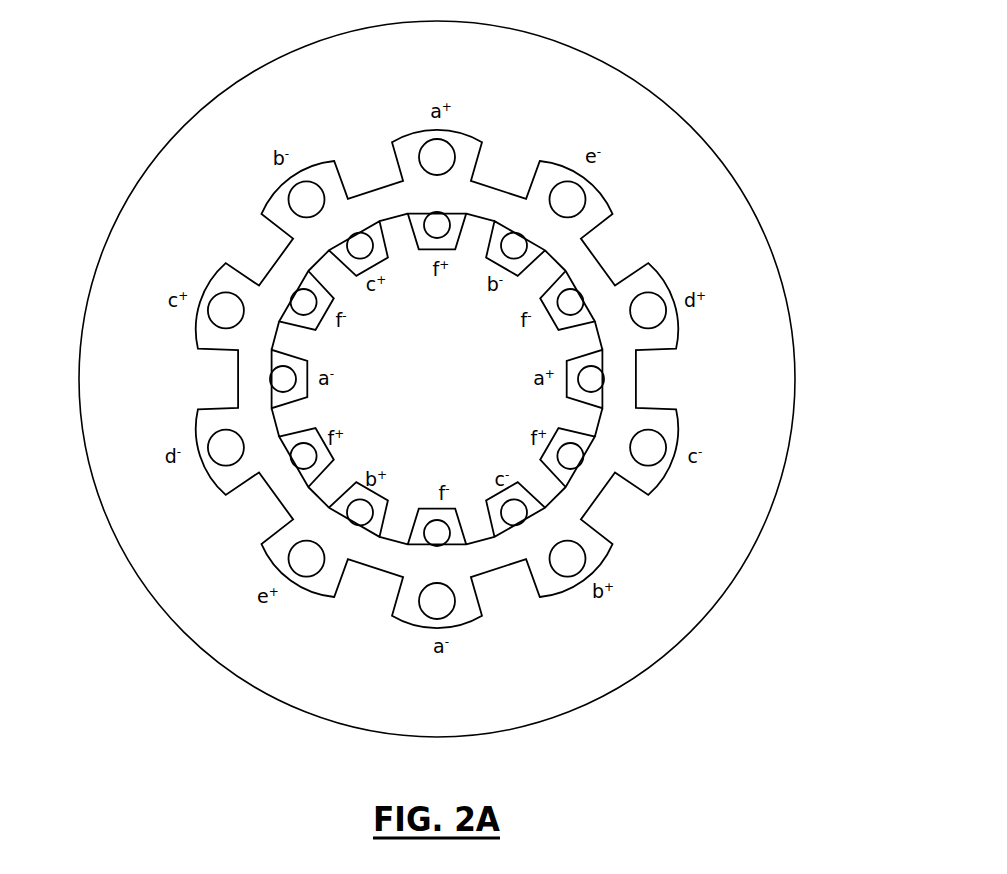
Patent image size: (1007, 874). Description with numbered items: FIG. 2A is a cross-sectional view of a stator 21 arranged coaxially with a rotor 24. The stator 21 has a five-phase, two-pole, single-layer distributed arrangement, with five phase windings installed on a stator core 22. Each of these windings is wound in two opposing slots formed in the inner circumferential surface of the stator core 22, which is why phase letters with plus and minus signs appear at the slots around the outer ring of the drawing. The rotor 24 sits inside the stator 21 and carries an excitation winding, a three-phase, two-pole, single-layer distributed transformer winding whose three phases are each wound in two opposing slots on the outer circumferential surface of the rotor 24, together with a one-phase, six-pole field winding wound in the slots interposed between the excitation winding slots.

The stator 21 is at (758, 538).
The stator core 22 is at (600, 78).
The rotor 24 is at (456, 390).